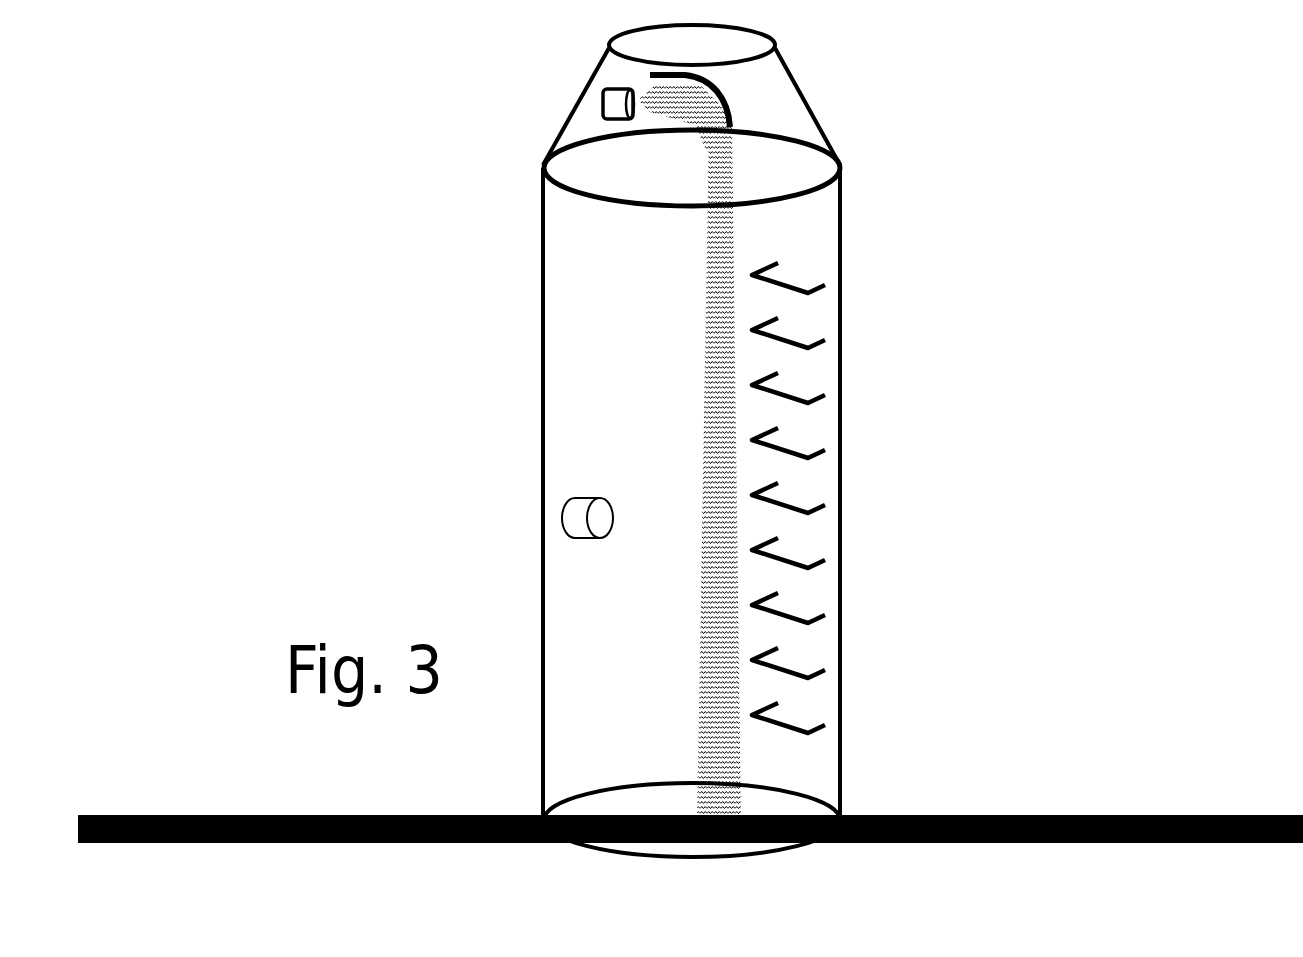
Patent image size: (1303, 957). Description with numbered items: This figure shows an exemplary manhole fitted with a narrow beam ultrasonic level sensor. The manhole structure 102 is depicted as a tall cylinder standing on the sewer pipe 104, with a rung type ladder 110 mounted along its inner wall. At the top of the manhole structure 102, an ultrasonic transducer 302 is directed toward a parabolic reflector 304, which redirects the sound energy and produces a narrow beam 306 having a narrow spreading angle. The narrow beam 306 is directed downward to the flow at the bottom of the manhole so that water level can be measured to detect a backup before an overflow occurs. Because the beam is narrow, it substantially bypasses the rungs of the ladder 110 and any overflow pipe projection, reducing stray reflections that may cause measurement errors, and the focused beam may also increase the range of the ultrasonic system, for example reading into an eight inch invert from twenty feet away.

The manhole structure 102 is at (840, 227).
The sewer pipe 104 is at (1073, 815).
The rung type ladder 110 is at (790, 450).
The ultrasonic transducer 302 is at (600, 105).
The parabolic reflector 304 is at (727, 98).
The narrow beam 306 is at (715, 337).